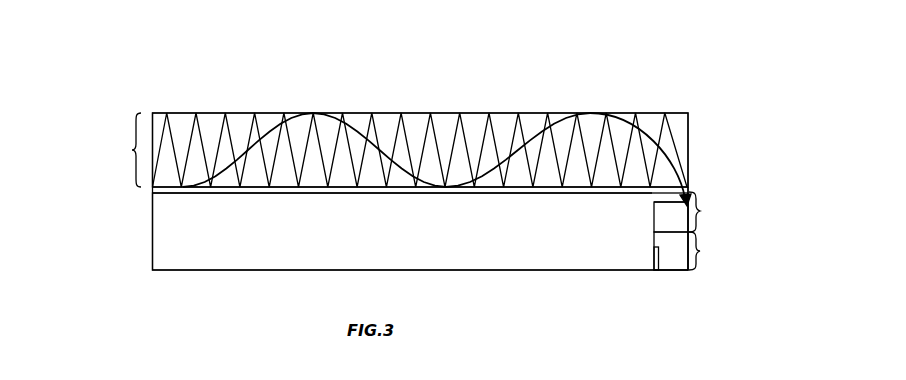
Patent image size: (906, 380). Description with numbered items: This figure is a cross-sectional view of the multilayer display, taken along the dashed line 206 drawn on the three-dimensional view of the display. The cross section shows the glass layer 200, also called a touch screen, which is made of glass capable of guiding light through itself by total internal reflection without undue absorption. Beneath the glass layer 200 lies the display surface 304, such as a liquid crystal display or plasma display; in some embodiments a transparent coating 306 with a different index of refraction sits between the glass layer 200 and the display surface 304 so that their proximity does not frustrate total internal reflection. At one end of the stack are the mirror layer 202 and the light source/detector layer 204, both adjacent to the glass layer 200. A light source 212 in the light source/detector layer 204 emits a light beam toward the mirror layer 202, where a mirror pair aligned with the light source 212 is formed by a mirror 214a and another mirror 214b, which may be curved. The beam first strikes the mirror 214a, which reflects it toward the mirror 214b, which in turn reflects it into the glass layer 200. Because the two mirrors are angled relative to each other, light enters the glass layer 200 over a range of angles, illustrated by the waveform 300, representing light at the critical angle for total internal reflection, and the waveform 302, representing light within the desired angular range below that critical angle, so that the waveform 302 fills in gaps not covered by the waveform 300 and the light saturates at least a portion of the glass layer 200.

The dashed line 206 is at (157, 83).
The glass layer 200 is at (132, 150).
The mirror layer 202 is at (701, 211).
The light source/detector layer 204 is at (701, 251).
The light source 212 is at (656, 270).
The mirror 214a is at (667, 202).
The mirror 214b is at (690, 193).
The waveform 300 is at (427, 122).
The waveform 302 is at (333, 118).
The display surface 304 is at (403, 250).
The interface layer 306 is at (242, 194).